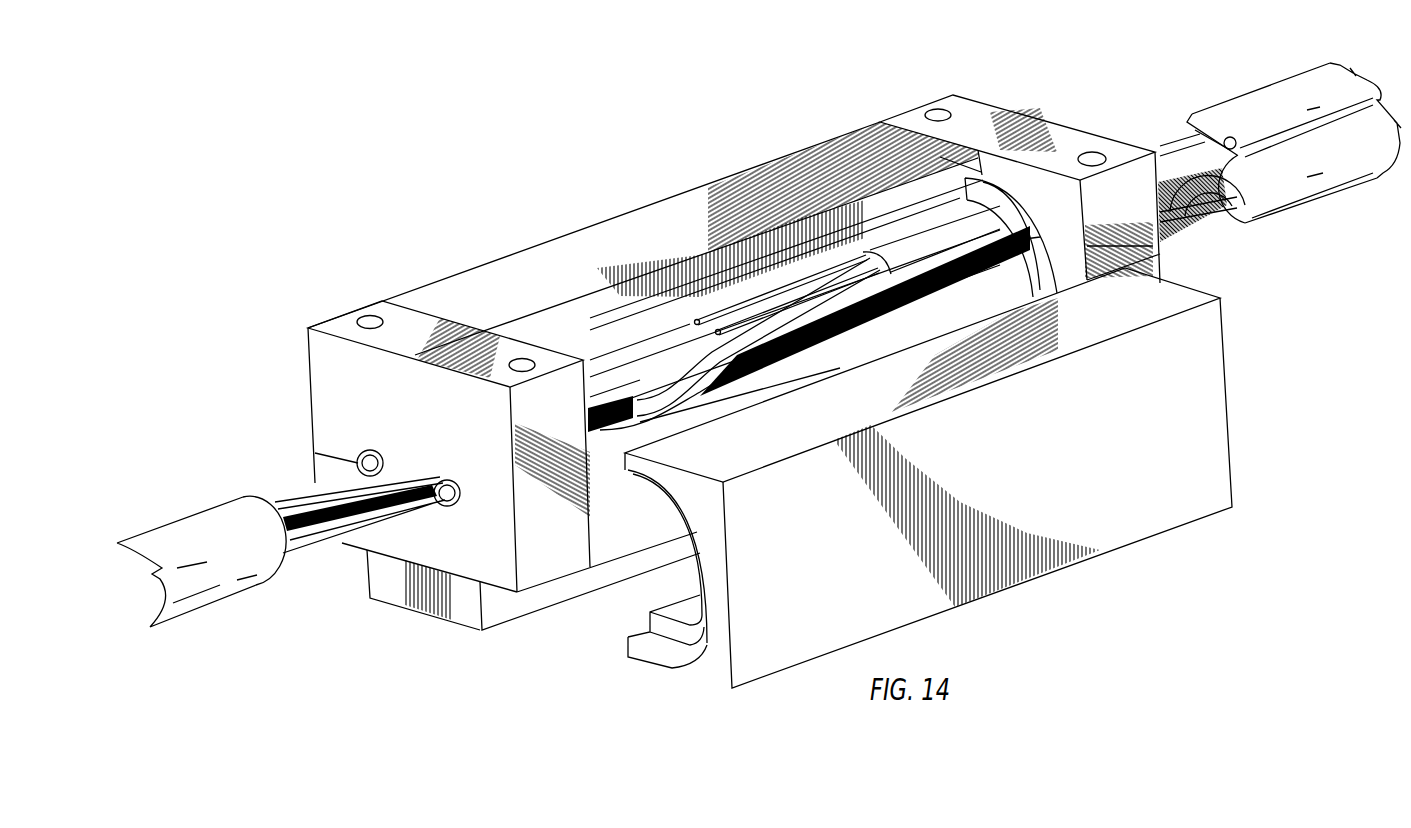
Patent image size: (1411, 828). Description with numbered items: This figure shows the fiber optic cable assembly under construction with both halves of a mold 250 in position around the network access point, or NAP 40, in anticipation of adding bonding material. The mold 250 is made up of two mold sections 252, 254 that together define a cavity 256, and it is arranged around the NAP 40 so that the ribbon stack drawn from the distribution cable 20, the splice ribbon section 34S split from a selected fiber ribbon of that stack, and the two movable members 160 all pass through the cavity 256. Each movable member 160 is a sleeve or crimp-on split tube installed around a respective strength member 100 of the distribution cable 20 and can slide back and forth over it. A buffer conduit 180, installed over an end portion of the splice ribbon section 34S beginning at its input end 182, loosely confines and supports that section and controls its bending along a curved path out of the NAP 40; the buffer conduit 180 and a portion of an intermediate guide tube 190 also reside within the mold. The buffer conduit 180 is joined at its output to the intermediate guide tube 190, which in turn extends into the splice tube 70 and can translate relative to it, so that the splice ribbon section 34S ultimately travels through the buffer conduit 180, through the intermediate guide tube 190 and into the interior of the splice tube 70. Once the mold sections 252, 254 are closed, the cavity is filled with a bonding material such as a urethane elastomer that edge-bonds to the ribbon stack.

The distribution cable 20 is at (236, 568).
The splice ribbon section 34S is at (683, 418).
The network access point 40 is at (1063, 585).
The splice tube 70 is at (1243, 93).
The strength member 100 is at (412, 525).
The movable member 160 is at (848, 304).
The buffer conduit 180 is at (663, 392).
The input end of buffer conduit 182 is at (598, 395).
The intermediate guide tube 190 is at (908, 243).
The mold 250 is at (726, 150).
The mold section 252 is at (633, 237).
The mold section 254 is at (1157, 307).
The cavity 256 is at (635, 513).